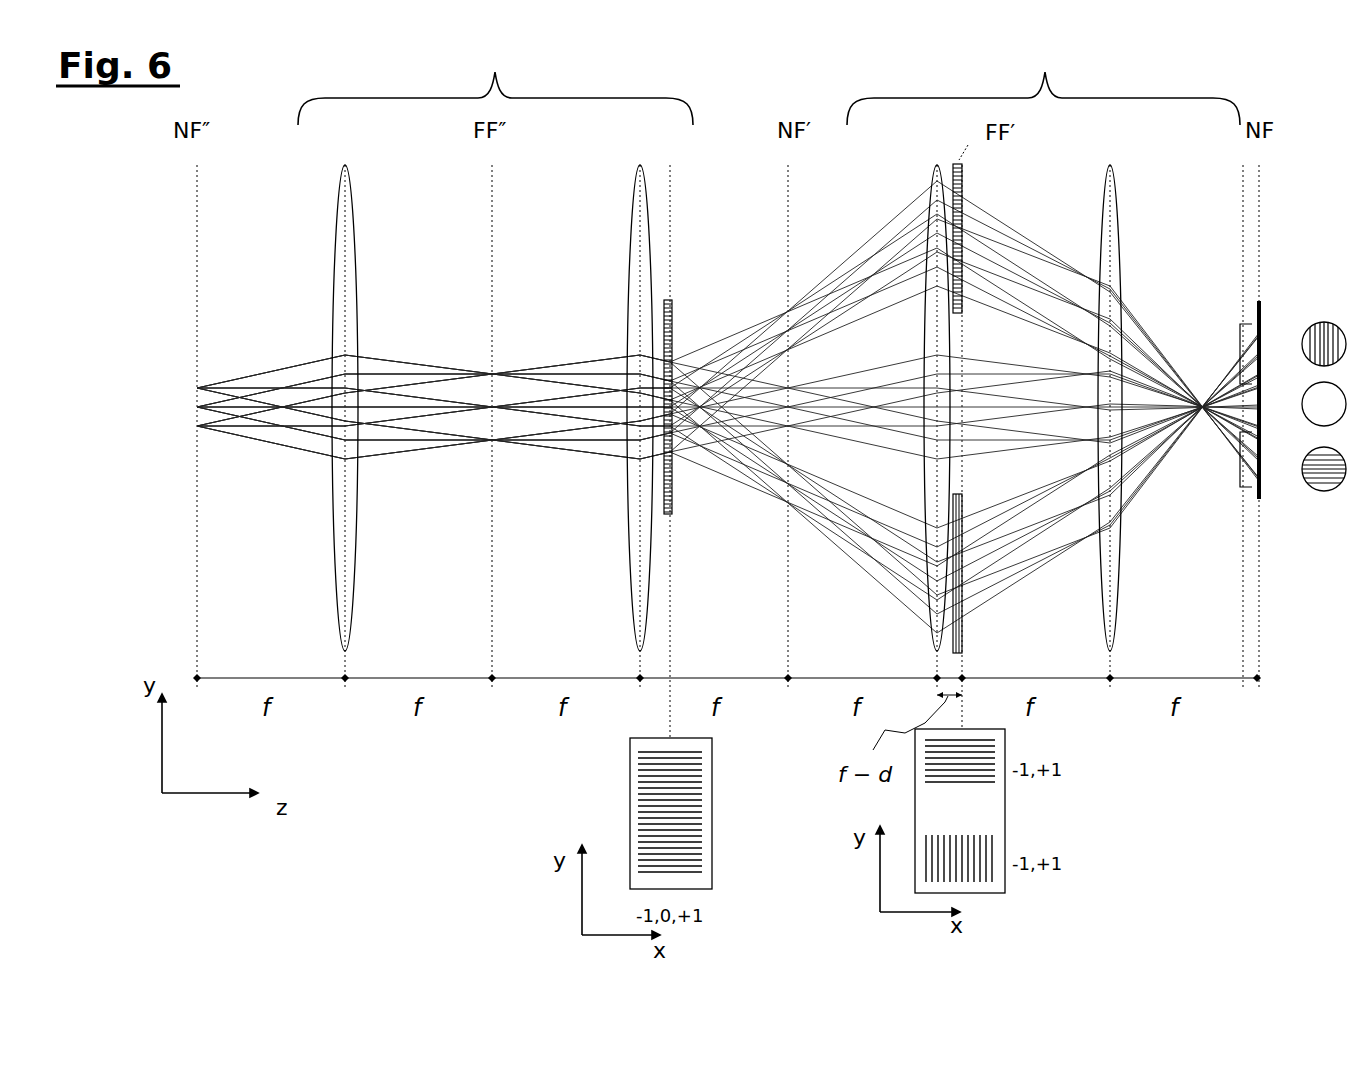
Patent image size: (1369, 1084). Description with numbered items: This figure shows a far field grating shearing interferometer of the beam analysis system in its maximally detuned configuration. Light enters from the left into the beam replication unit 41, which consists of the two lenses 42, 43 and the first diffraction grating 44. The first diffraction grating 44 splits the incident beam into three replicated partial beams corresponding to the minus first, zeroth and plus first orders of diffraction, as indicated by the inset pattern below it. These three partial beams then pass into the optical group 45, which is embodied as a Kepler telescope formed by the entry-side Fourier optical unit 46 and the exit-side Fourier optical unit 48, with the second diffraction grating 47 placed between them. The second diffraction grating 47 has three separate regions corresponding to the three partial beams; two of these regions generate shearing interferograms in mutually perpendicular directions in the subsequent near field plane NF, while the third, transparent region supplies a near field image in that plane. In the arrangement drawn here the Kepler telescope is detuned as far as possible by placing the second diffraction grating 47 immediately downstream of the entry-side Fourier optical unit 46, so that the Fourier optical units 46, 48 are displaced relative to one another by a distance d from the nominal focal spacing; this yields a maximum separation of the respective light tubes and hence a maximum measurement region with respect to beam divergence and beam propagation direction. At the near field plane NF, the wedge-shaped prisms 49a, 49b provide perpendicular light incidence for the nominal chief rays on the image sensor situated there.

The beam replication unit 41 is at (495, 85).
The lens 42 is at (331, 241).
The lens 43 is at (640, 288).
The first diffraction grating 44 is at (666, 292).
The optical group 45 is at (1043, 85).
The Fourier optical unit 46 is at (930, 218).
The second diffraction grating 47 is at (971, 184).
The Fourier optical unit 48 is at (1118, 240).
The wedge-shaped prism 49a is at (1240, 279).
The wedge-shaped prism 49b is at (1242, 527).